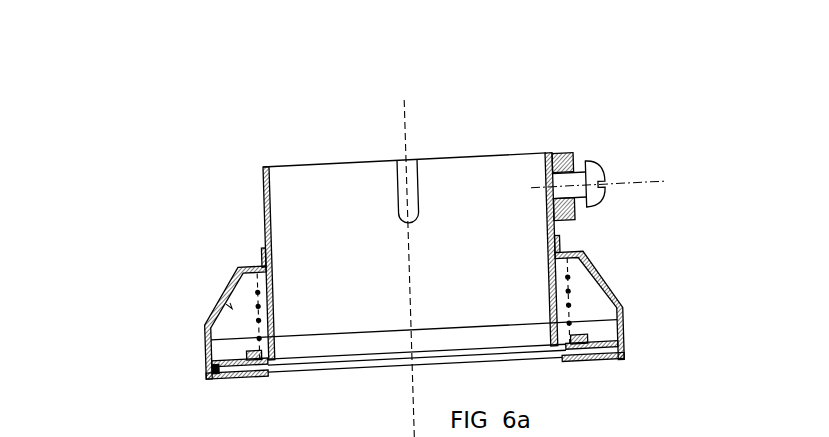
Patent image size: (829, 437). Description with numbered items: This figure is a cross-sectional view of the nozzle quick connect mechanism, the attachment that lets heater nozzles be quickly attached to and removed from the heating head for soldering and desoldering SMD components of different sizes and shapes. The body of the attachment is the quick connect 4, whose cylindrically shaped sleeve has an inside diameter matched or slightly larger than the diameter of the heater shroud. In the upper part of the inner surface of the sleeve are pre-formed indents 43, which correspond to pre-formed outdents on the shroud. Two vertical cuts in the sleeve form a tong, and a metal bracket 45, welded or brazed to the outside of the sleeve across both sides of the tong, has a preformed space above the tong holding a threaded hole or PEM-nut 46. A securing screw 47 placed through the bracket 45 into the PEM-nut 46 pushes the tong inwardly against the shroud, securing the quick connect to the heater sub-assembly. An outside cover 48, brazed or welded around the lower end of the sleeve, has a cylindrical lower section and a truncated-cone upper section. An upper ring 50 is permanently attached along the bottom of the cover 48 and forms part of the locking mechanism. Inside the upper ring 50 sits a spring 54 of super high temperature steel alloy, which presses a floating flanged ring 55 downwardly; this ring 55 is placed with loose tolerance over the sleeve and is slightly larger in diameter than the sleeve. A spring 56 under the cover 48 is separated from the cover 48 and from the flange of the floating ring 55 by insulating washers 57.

The housing box 4 is at (316, 180).
The indents 43 is at (407, 187).
The bracket 45 is at (572, 153).
The PEM-nut 46 is at (575, 158).
The securing screw 47 is at (593, 177).
The outside cover 48 is at (590, 260).
The upper ring 50 is at (227, 348).
The spring 54 is at (210, 368).
The floating flanged ring 55 is at (205, 353).
The spring 56 is at (568, 277).
The insulating washers 57 is at (237, 268).